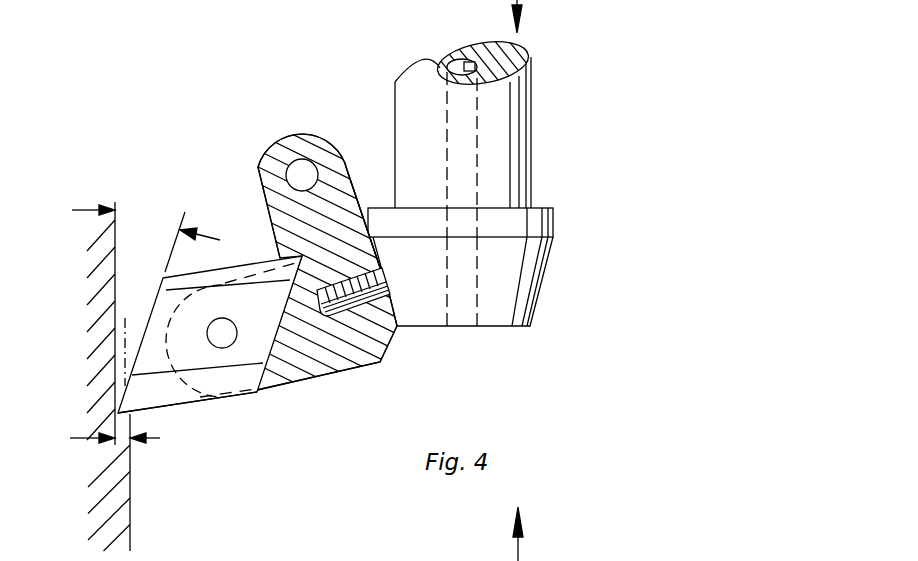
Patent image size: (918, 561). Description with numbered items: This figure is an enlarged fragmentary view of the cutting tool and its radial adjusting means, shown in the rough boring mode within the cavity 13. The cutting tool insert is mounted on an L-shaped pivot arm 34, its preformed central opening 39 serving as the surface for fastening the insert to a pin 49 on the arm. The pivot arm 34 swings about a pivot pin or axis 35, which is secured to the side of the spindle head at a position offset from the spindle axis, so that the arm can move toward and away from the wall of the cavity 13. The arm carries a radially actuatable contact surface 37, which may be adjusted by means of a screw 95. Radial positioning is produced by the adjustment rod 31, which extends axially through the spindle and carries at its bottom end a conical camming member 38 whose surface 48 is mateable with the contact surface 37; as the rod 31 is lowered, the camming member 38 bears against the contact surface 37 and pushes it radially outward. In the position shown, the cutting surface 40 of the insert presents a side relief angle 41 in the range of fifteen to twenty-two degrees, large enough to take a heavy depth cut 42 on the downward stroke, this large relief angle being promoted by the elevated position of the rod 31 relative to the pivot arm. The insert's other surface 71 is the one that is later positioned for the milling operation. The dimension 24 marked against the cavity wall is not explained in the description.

The cavity 13 is at (130, 498).
The offset distance 24 is at (160, 395).
The adjustment rod 31 is at (531, 128).
The pivot arm 34 is at (347, 372).
The pivot pin or axis 35 is at (304, 176).
The contact surface 37 is at (388, 291).
The conical camming member 38 is at (489, 296).
The preformed central opening 39 is at (225, 338).
The surface of the cutting tool 40 is at (144, 333).
The side relief angle 41 is at (233, 200).
The heavy depth cut 42 is at (72, 438).
The camming surface 48 is at (541, 286).
The pin 49 is at (222, 340).
The other surface of the cutting tool insert 71 is at (204, 405).
The screw 95 is at (357, 285).